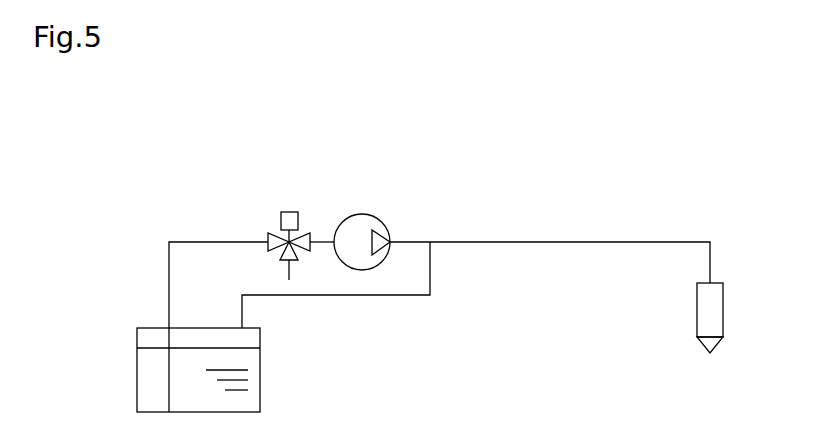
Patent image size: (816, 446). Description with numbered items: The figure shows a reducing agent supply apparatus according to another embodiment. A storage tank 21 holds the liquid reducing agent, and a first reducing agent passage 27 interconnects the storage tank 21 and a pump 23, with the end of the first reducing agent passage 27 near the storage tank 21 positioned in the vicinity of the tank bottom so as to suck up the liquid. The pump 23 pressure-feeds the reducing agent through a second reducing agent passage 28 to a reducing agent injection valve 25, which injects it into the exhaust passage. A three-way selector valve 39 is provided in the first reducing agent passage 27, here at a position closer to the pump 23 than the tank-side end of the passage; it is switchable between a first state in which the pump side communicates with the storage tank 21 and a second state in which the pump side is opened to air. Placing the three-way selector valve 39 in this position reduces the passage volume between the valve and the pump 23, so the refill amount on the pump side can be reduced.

The storage tank 21 is at (258, 380).
The pump 23 is at (361, 215).
The reducing agent injection valve 25 is at (713, 310).
The first reducing agent passage 27 is at (197, 241).
The second reducing agent passage 28 is at (585, 241).
The three-way selector valve 39 is at (270, 238).